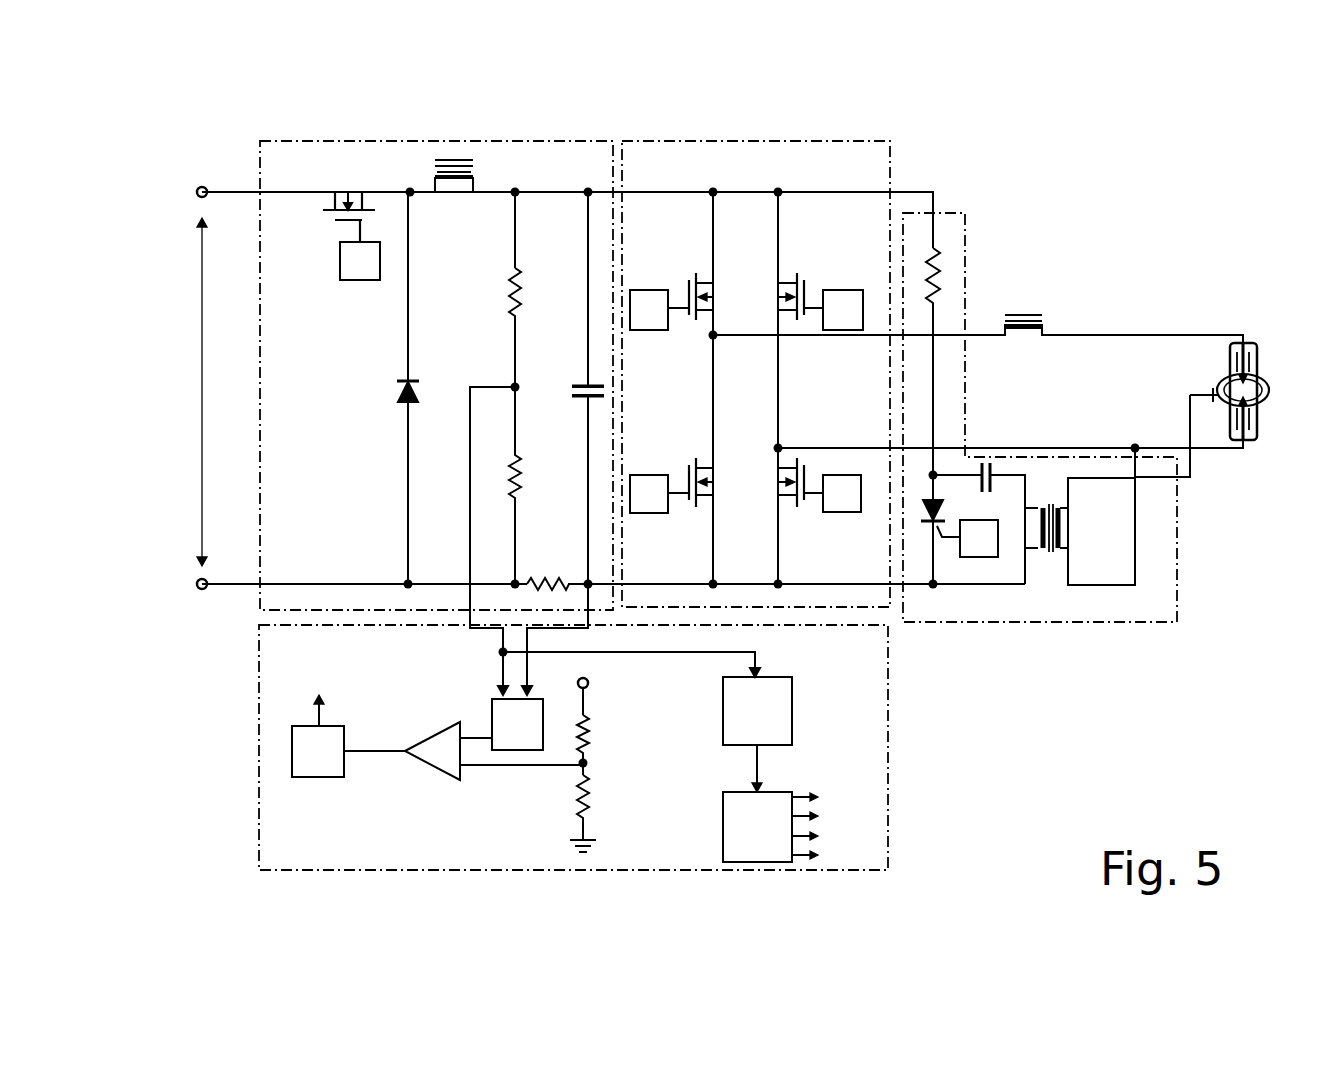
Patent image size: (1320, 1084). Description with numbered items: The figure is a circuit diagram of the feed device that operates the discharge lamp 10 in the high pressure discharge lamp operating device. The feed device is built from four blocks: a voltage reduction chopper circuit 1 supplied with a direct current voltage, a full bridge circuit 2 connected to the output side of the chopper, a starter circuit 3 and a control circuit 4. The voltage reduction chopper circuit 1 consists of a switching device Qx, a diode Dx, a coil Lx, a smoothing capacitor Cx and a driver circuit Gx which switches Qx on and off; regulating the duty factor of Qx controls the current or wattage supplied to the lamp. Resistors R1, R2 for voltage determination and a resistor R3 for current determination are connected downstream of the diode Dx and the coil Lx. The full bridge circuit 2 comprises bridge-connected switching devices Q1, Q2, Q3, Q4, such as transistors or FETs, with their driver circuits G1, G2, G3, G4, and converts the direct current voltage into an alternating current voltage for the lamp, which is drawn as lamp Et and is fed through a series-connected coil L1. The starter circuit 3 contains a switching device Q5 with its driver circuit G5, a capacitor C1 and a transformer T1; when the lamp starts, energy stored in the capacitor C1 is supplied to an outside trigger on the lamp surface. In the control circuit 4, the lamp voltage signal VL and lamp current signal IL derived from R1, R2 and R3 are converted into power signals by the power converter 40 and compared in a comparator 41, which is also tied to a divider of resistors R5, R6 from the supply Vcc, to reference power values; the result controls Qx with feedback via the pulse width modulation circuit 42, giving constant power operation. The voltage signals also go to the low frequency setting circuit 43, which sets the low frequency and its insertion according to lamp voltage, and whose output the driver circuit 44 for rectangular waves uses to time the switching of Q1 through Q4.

The voltage reduction chopper circuit 1 is at (420, 107).
The full bridge circuit 2 is at (733, 107).
The starter circuit 3 is at (1030, 630).
The control circuit 4 is at (898, 768).
The discharge lamp 10 is at (1246, 458).
The switching device Qx is at (333, 212).
The driver circuit Gx is at (352, 282).
The coil Lx is at (453, 180).
The diode Dx is at (396, 396).
The resistor for voltage determination R1 is at (724, 333).
The resistor for voltage determination R2 is at (528, 485).
The resistor for current determination R3 is at (548, 567).
The smoothing capacitor Cx is at (581, 388).
The switching device Q1 is at (684, 272).
The switching device Q2 is at (686, 454).
The switching device Q3 is at (800, 268).
The switching device Q4 is at (801, 511).
The driver circuit G1 is at (651, 334).
The driver circuit G2 is at (651, 517).
The driver circuit G3 is at (844, 285).
The driver circuit G4 is at (851, 517).
The coil L1 is at (1023, 305).
The capacitor C1 is at (989, 463).
The thyristor switching element Q5 is at (947, 529).
The gate drive circuit of Q5 G5 is at (981, 562).
The transformer T1 is at (1045, 563).
The discharge lamp Et is at (1226, 391).
The lamp voltage detection signal VL is at (481, 668).
The lamp current detection signal IL is at (540, 668).
The supply voltage Vcc is at (604, 695).
The resistor R5 is at (597, 745).
The resistor R6 is at (594, 813).
The power converter 40 is at (492, 704).
The comparator 41 is at (442, 784).
The pulse width modulation circuit 42 is at (322, 781).
The low frequency setting circuit 43 is at (714, 844).
The driver circuit for rectangular waves 44 is at (716, 732).